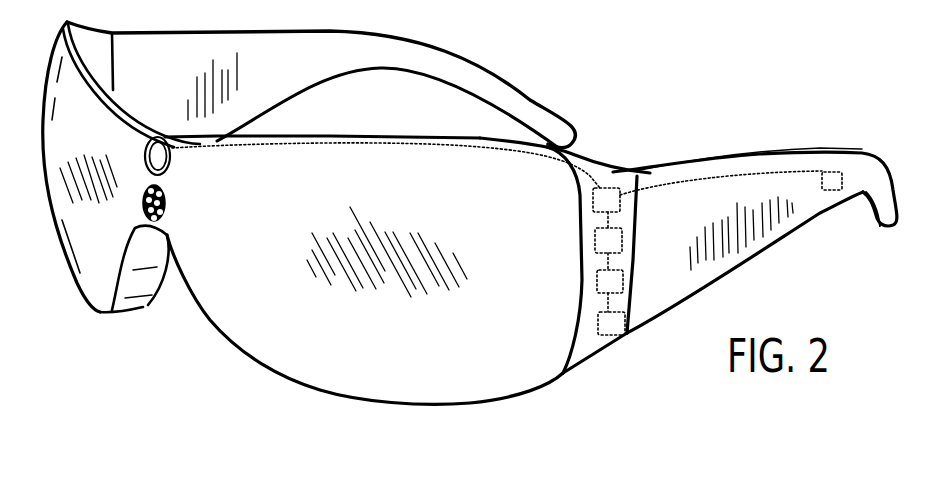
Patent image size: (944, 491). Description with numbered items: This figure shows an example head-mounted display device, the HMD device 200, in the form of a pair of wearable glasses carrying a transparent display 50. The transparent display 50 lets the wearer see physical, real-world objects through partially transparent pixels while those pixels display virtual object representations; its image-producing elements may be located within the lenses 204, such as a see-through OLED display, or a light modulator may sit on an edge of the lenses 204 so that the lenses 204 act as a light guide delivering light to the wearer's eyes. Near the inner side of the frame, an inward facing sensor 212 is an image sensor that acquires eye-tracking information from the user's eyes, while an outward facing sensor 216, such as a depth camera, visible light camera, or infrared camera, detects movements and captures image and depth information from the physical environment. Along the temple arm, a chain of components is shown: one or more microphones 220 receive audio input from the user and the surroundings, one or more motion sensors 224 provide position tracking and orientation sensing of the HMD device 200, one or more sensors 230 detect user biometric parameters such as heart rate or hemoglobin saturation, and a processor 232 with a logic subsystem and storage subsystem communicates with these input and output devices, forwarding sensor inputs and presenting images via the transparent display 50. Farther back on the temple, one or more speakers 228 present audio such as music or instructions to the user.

The HMD device 200 is at (82, 355).
The lenses 204 is at (90, 283).
The transparent display 50 is at (257, 330).
The inward facing sensor 212 is at (170, 203).
The outward facing sensor 216 is at (172, 151).
The microphones 220 is at (614, 188).
The motion sensors 224 is at (636, 220).
The speakers 228 is at (834, 172).
The sensors 230 is at (634, 262).
The processor 232 is at (612, 335).